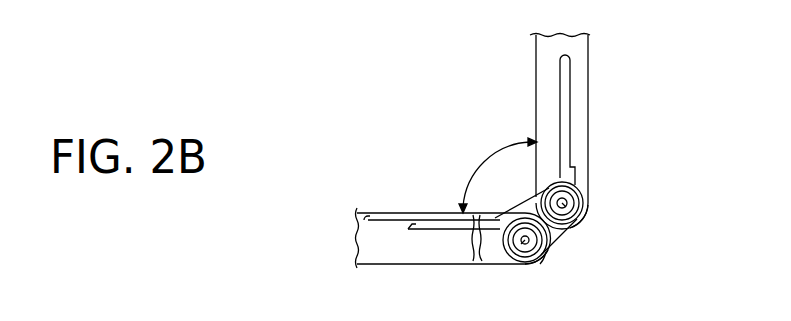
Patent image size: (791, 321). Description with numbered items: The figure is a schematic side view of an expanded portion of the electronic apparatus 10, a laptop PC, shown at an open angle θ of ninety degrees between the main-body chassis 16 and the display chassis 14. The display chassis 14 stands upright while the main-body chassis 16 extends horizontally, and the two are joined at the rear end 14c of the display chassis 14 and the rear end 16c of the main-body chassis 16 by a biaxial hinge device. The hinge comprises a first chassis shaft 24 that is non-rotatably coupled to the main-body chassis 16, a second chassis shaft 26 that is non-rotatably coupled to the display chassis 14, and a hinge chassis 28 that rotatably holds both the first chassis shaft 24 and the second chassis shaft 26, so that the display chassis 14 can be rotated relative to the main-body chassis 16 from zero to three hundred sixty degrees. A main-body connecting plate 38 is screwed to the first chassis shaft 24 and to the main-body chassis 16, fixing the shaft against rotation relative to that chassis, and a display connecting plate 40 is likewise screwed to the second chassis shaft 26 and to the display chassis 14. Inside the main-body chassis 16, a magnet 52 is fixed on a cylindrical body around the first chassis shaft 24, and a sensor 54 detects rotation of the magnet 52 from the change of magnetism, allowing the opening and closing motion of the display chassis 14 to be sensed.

The electronic apparatus 10 is at (503, 166).
The display chassis 14 is at (590, 140).
The rear end of the display chassis 14c is at (586, 229).
The main-body chassis 16 is at (486, 248).
The rear end of the main-body chassis 16c is at (556, 259).
The first chassis shaft 24 is at (524, 263).
The second chassis shaft 26 is at (578, 203).
The hinge chassis 28 is at (562, 235).
The main-body connecting plate 38 is at (430, 227).
The display connecting plate 40 is at (570, 122).
The magnet 52 is at (541, 264).
The sensor 54 is at (481, 265).